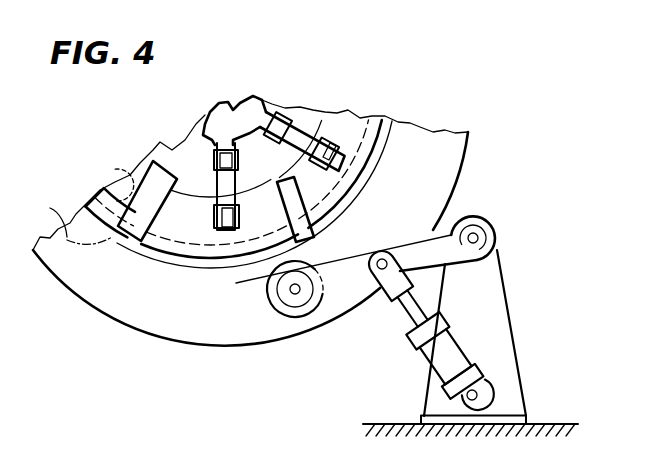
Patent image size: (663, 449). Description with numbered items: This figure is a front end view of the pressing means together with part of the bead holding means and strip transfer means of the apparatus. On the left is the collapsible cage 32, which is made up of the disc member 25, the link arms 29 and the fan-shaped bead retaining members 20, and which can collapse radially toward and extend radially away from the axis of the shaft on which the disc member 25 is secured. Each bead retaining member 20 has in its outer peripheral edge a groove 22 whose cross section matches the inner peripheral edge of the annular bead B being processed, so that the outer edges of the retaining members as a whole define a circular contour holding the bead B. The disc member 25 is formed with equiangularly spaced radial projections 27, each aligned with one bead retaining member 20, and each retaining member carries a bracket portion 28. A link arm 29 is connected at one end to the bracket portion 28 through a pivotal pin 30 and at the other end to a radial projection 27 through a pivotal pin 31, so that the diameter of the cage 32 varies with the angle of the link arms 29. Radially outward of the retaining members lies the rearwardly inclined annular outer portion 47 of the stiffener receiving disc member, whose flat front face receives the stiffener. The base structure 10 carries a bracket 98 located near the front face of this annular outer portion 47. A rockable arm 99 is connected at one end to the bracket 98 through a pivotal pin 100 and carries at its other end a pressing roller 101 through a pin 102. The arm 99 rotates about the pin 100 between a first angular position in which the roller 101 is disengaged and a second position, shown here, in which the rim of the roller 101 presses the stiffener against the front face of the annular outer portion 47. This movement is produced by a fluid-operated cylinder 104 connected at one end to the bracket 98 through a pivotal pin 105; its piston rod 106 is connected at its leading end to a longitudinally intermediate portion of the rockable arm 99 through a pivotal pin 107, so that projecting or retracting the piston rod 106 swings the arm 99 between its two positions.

The base structure 10 is at (566, 424).
The bead retaining member 20 is at (408, 128).
The groove 22 is at (110, 166).
The disc member 25 is at (188, 138).
The radial projection 27 is at (266, 112).
The bracket portion 28 is at (331, 137).
The link arm 29 is at (289, 158).
The pivotal pin 30 is at (340, 140).
The pivotal pin 31 is at (317, 108).
The collapsible cage 32 is at (157, 150).
The annular outer portion 47 is at (93, 306).
The bracket 98 is at (510, 308).
The rockable arm 99 is at (460, 262).
The pivotal pin 100 is at (496, 236).
The pressing roller 101 is at (267, 298).
The pin 102 is at (295, 294).
The fluid-operated cylinder 104 is at (420, 353).
The pivotal pin 105 is at (486, 392).
The piston rod 106 is at (400, 310).
The pivotal pin 107 is at (382, 259).
The annular bead B is at (71, 220).